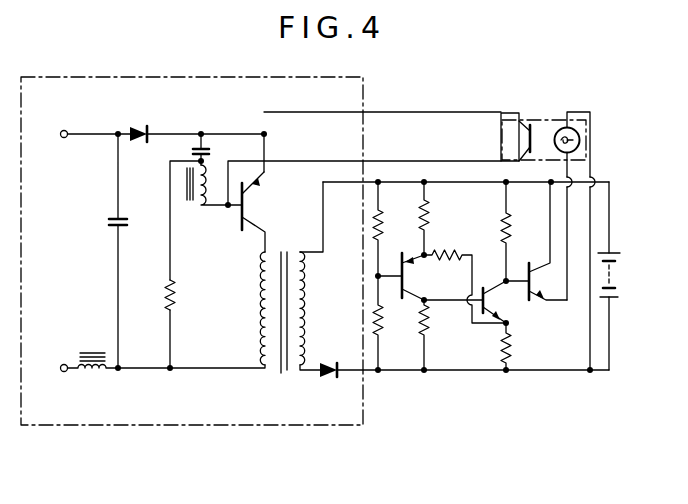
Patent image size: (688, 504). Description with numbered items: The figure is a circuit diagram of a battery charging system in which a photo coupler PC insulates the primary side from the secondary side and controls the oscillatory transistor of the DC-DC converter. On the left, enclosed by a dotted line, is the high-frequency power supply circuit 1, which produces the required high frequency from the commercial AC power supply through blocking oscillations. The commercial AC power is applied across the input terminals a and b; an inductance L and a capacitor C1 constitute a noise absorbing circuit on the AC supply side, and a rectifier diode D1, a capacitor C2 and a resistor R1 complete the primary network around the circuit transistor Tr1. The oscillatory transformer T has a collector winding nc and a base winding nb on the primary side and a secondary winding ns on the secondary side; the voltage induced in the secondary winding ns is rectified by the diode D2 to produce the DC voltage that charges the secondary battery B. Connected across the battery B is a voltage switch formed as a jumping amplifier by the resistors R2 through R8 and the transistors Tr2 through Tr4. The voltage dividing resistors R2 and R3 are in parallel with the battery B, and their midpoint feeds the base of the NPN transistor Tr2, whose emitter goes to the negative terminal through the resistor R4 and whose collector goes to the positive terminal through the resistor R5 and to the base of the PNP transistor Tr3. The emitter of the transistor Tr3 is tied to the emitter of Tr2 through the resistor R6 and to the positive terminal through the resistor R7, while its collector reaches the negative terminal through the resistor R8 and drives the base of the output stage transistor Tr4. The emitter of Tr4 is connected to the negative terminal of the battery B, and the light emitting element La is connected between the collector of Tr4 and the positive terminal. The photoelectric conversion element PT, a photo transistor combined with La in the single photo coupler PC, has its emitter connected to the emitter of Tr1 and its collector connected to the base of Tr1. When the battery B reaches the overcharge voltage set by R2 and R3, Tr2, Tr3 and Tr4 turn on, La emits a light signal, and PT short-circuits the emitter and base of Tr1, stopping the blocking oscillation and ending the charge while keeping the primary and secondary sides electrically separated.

The high-frequency power supply circuit 1 is at (196, 429).
The input terminal a is at (56, 134).
The input terminal b is at (56, 367).
The rectifier diode D1 is at (139, 124).
The capacitor C1 is at (133, 214).
The capacitor C2 is at (211, 152).
The base winding nb is at (187, 200).
The circuit transistor Tr1 is at (246, 205).
The resistor R1 is at (174, 299).
The inductance L is at (77, 378).
The collector winding nc is at (261, 269).
The oscillatory transformer T is at (278, 373).
The secondary winding ns is at (304, 269).
The rectifier diode D2 is at (330, 380).
The voltage dividing resistor R2 is at (375, 226).
The voltage dividing resistor R3 is at (382, 327).
The resistor R4 is at (421, 224).
The resistor R5 is at (431, 325).
The resistor R6 is at (443, 252).
The resistor R7 is at (509, 356).
The resistor R8 is at (507, 226).
The NPN transistor Tr2 is at (404, 278).
The PNP transistor Tr3 is at (485, 304).
The output stage transistor Tr4 is at (530, 302).
The photoelectric conversion element PT is at (522, 127).
The photo coupler PC is at (550, 120).
The light emitting element La is at (580, 140).
The secondary battery B is at (619, 276).